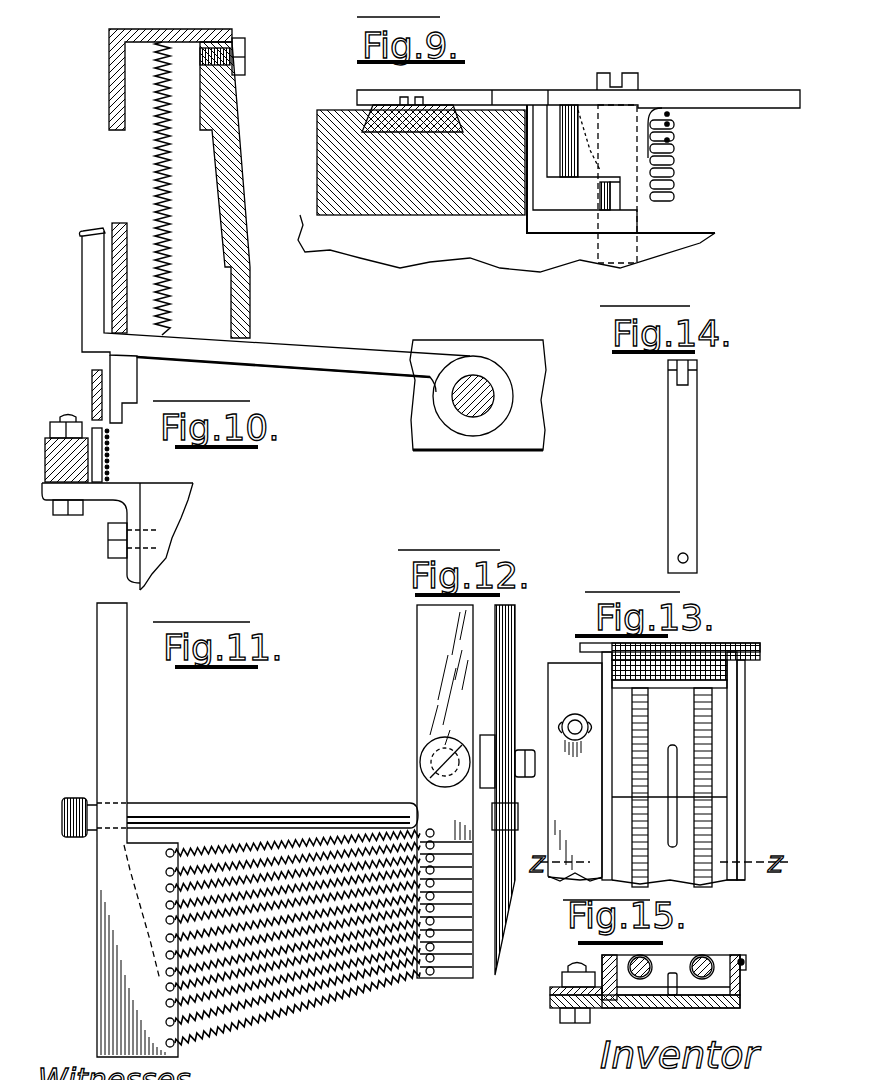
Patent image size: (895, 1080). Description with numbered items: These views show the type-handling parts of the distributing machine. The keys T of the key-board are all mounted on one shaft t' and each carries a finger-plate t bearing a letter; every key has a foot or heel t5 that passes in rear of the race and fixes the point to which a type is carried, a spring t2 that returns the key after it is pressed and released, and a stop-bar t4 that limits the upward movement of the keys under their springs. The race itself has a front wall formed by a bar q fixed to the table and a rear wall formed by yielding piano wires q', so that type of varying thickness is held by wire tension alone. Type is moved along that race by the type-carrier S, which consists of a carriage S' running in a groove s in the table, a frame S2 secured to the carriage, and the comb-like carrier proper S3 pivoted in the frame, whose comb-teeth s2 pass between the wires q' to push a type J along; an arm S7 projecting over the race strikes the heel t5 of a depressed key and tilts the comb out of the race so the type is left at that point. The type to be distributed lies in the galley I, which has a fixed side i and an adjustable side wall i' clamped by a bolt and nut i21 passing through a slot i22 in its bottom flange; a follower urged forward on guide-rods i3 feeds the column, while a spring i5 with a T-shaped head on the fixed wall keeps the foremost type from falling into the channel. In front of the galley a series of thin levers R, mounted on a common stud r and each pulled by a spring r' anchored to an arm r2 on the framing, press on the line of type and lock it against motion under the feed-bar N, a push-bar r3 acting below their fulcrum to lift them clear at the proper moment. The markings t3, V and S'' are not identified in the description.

In FIG. 10, the bracket t3 is at (109, 40).
In FIG. 10, the spring t2 is at (172, 191).
In FIG. 10, the stop-bar t4 is at (128, 271).
In FIG. 10, the finger-plate t is at (88, 218).
In FIG. 10, the key T is at (283, 338).
In FIG. 10, the heel t5 is at (138, 383).
In FIG. 10, the shaft t' is at (473, 367).
In FIG. 10, the plate V is at (91, 387).
In FIG. 10, the bar q is at (52, 449).
In FIG. 10, the race-wires q' is at (125, 455).
In FIG. 9, the race-wires q' is at (682, 154).
In FIG. 9, the type-carrier S is at (578, 86).
In FIG. 9, the carriage S' is at (617, 182).
In FIG. 9, the arm S'' is at (337, 91).
In FIG. 9, the frame S2 is at (536, 91).
In FIG. 9, the carrier proper S3 is at (590, 162).
In FIG. 9, the arm S7 is at (741, 92).
In FIG. 9, the groove s is at (392, 130).
In FIG. 9, the comb-teeth s2 is at (676, 130).
In FIG. 14, the spring i5 is at (692, 412).
In FIG. 13, the spring i5 is at (746, 718).
In FIG. 15, the spring i5 is at (747, 961).
In FIG. 11, the thin levers R is at (425, 667).
In FIG. 12, the thin levers R is at (508, 646).
In FIG. 11, the stud r is at (428, 762).
In FIG. 11, the spring r' is at (300, 938).
In FIG. 12, the spring r' is at (525, 745).
In FIG. 11, the arm r2 is at (137, 830).
In FIG. 11, the push-bar r3 is at (272, 803).
In FIG. 12, the push-bar r3 is at (518, 820).
In FIG. 13, the feed-bar N is at (580, 648).
In FIG. 13, the type J is at (748, 655).
In FIG. 13, the side of galley i is at (685, 766).
In FIG. 15, the side of galley i is at (755, 985).
In FIG. 13, the side wall i' is at (575, 772).
In FIG. 15, the side wall i' is at (568, 983).
In FIG. 13, the guide-rods i3 is at (668, 690).
In FIG. 15, the guide-rods i3 is at (671, 966).
In FIG. 13, the bolt and nut i21 is at (576, 714).
In FIG. 13, the slot i22 is at (580, 758).
In FIG. 15, the galley I is at (662, 984).